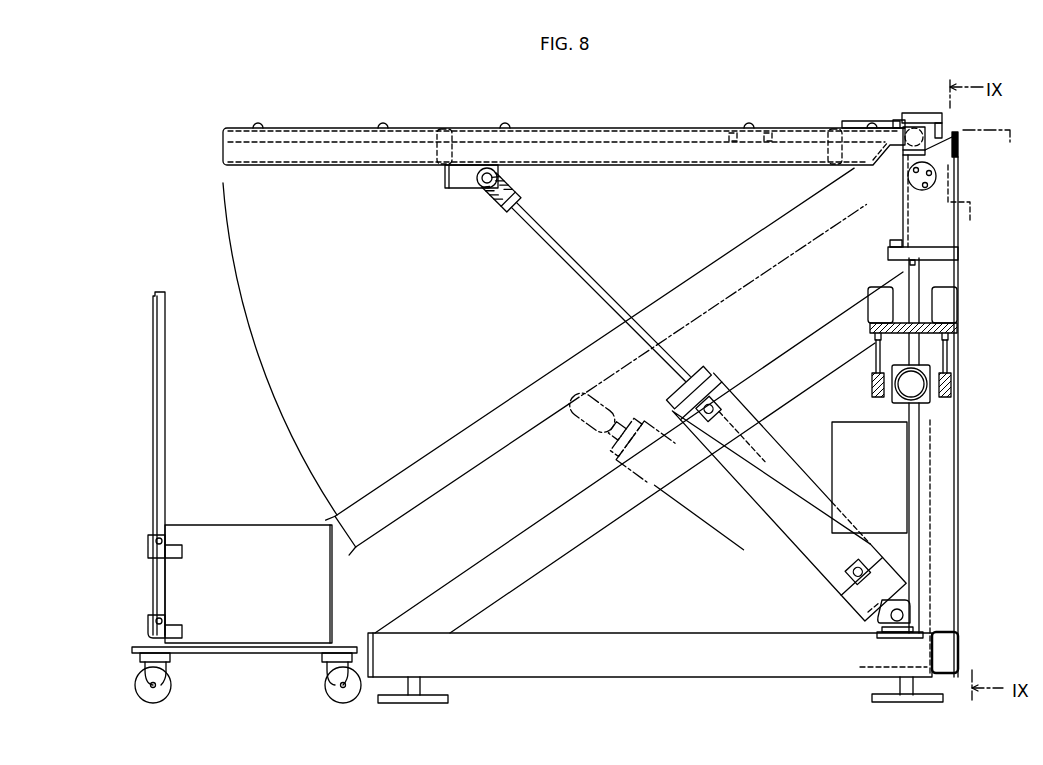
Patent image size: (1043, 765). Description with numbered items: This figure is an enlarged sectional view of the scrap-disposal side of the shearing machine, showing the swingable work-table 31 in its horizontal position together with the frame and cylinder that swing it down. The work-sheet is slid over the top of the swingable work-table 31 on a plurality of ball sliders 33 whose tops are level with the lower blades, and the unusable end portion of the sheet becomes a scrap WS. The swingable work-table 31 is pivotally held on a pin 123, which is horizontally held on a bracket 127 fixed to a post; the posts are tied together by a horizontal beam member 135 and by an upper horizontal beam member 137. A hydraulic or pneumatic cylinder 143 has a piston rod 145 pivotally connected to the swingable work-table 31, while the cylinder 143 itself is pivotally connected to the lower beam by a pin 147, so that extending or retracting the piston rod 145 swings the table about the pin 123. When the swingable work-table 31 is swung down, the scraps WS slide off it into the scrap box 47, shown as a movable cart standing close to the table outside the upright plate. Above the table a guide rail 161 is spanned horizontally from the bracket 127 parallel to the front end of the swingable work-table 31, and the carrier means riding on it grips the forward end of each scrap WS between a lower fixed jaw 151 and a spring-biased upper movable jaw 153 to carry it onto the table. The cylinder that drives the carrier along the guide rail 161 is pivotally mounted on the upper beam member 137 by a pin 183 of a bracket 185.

The swingable work-table 31 is at (600, 127).
The ball sliders 33 is at (259, 127).
The scrap WS is at (882, 120).
The lower fixed jaw 151 is at (898, 120).
The upper movable jaw 153 is at (919, 112).
The horizontal beam member 135 is at (962, 148).
The pin 123 is at (902, 147).
The guide rail 161 is at (915, 190).
The bracket 127 is at (958, 252).
The upper horizontal beam member 137 is at (958, 304).
The bracket 185 is at (950, 360).
The pin 183 is at (931, 385).
The piston rod 145 is at (560, 260).
The hydraulic or pneumatic cylinder 143 is at (757, 489).
The pin 147 is at (888, 616).
The scrap box 47 is at (160, 582).